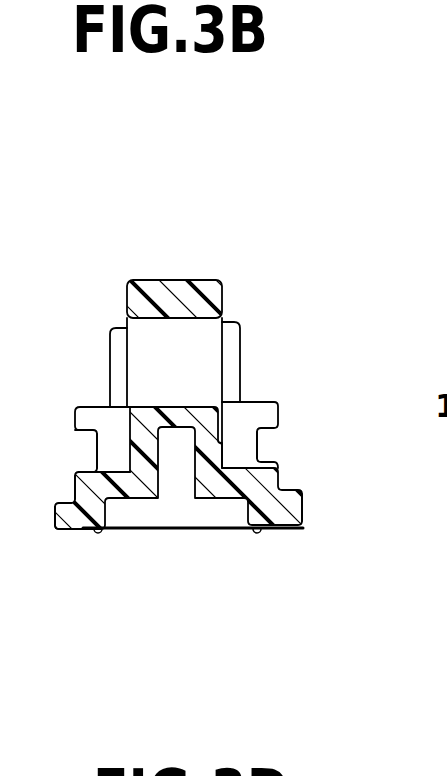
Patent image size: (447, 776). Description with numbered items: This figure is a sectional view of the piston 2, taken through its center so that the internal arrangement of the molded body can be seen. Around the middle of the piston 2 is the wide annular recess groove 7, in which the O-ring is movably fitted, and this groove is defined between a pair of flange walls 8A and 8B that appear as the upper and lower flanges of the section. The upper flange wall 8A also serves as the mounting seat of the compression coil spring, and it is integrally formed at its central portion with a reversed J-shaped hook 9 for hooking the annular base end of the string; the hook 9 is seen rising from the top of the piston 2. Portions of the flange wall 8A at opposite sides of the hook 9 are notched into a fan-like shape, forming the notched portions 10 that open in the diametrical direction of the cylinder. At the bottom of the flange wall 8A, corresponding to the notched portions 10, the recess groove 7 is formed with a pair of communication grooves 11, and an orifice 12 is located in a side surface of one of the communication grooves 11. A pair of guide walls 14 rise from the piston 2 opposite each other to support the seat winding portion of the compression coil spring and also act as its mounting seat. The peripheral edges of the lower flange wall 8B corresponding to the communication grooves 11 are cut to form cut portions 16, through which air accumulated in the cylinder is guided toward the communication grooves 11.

The piston 2 is at (223, 414).
The recess groove 7 is at (63, 498).
The flange wall 8A is at (98, 417).
The flange wall 8B is at (77, 530).
The hook 9 is at (175, 283).
The notched portion 10 is at (245, 423).
The communication groove 11 is at (112, 450).
The orifice 12 is at (203, 437).
The guide wall 14 is at (238, 340).
The cut portion 16 is at (63, 522).